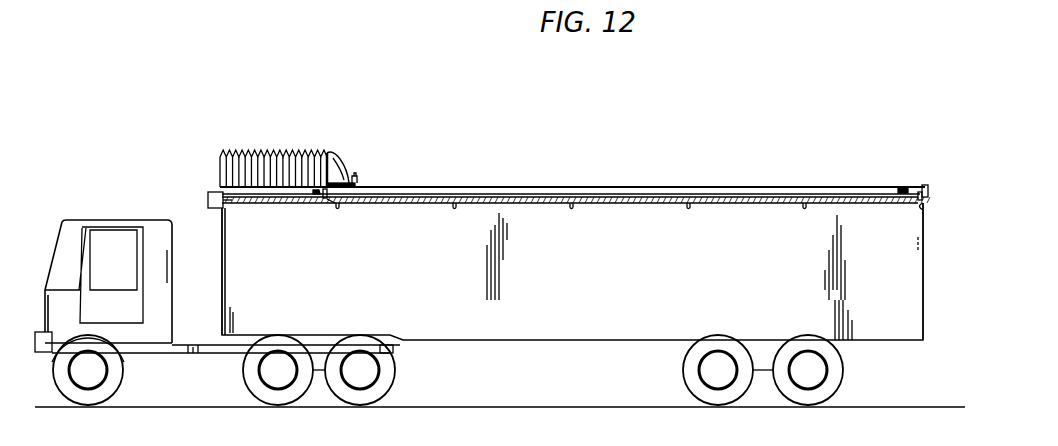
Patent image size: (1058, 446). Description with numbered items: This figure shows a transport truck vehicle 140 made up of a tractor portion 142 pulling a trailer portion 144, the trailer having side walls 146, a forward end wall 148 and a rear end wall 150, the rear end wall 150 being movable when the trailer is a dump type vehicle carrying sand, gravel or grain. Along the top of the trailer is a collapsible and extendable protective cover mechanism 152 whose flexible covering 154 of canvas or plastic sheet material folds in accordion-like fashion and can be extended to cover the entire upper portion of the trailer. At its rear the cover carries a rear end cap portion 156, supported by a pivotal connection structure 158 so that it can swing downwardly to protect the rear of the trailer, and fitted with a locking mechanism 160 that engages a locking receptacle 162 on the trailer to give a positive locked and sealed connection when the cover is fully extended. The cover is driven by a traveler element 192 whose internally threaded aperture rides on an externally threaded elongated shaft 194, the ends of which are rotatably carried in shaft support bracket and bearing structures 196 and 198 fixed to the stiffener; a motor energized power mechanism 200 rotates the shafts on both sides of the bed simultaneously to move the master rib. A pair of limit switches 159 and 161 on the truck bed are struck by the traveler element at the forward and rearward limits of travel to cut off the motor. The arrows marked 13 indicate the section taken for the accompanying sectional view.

The section line 13- 13 is at (918, 132).
The transport truck vehicle 140 is at (571, 238).
The tractor portion 142 is at (108, 218).
The trailer portion 144 is at (483, 192).
The side walls 146 is at (577, 287).
The forward end wall 148 is at (222, 247).
The rear end wall 150 is at (923, 315).
The protective cover mechanism 152 is at (260, 138).
The flexible covering 154 is at (287, 153).
The rear end cap portion 156 is at (330, 180).
The pivotal connection structure 158 is at (333, 189).
The limit switch 159 is at (315, 196).
The locking mechanism 160 is at (358, 178).
The limit switch 161 is at (900, 187).
The locking receptacle 162 is at (928, 188).
The traveler element 192 is at (327, 203).
The elongated shaft 194 is at (550, 200).
The shaft support bracket and bearing structure 196 is at (224, 208).
The shaft support bracket and bearing structure 198 is at (922, 210).
The motor energized power mechanism 200 is at (210, 192).